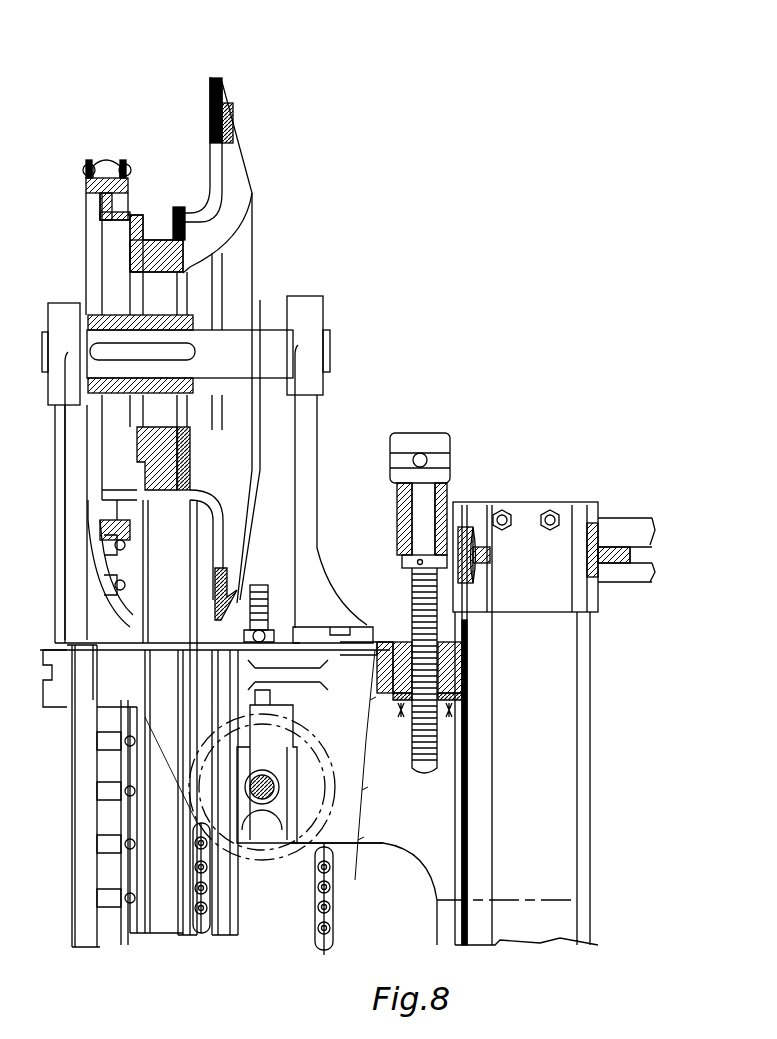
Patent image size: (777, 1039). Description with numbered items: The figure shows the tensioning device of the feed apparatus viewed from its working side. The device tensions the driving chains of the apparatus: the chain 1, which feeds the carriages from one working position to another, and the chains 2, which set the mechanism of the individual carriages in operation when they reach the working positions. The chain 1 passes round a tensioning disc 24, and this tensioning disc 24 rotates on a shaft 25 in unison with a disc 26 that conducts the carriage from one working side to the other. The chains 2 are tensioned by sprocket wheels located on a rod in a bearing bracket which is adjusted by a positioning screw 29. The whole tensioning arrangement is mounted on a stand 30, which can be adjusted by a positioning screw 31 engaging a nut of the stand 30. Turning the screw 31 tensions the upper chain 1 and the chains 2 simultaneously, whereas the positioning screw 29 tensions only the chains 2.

The chain 1 is at (115, 158).
The chain 2 is at (313, 913).
The tensioning disc 24 is at (133, 213).
The shaft 25 is at (264, 341).
The disc 26 is at (232, 140).
The positioning screw 29 is at (259, 585).
The stand 30 is at (398, 824).
The positioning screw 31 is at (442, 443).